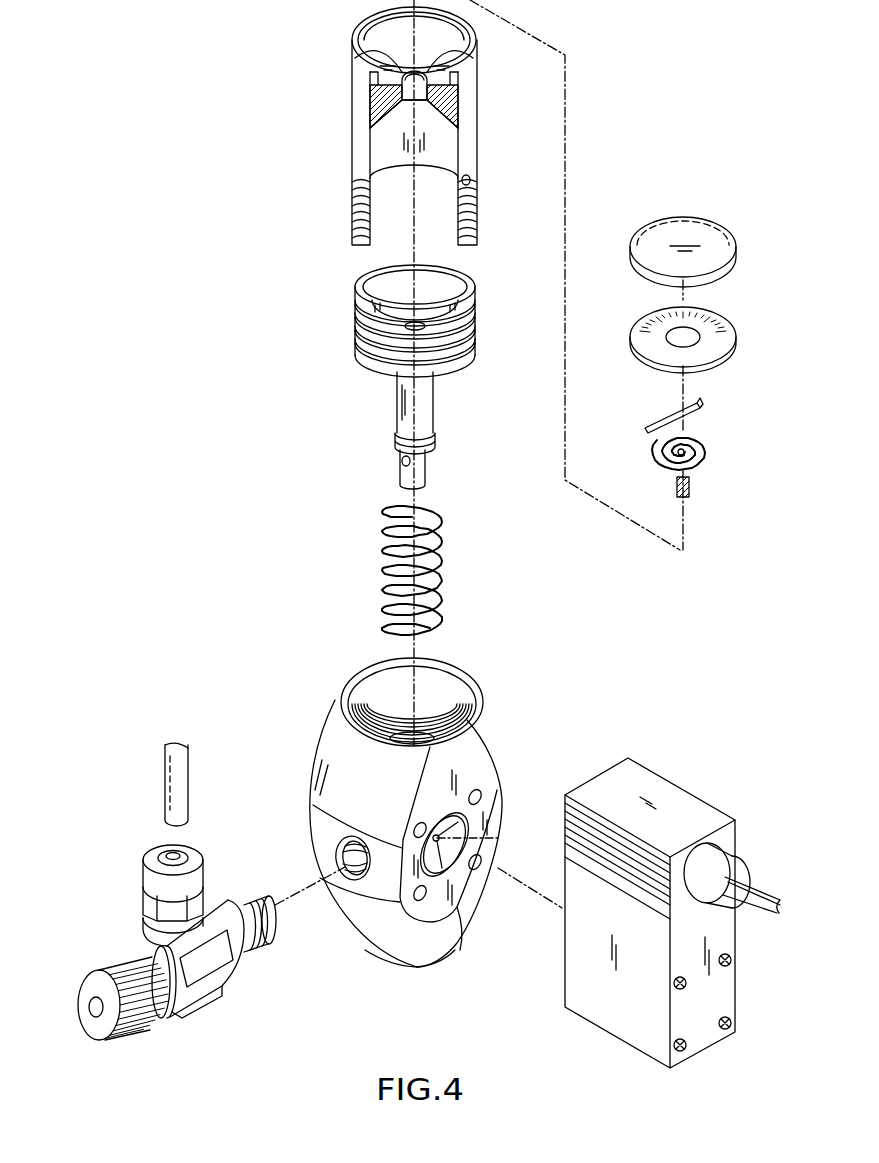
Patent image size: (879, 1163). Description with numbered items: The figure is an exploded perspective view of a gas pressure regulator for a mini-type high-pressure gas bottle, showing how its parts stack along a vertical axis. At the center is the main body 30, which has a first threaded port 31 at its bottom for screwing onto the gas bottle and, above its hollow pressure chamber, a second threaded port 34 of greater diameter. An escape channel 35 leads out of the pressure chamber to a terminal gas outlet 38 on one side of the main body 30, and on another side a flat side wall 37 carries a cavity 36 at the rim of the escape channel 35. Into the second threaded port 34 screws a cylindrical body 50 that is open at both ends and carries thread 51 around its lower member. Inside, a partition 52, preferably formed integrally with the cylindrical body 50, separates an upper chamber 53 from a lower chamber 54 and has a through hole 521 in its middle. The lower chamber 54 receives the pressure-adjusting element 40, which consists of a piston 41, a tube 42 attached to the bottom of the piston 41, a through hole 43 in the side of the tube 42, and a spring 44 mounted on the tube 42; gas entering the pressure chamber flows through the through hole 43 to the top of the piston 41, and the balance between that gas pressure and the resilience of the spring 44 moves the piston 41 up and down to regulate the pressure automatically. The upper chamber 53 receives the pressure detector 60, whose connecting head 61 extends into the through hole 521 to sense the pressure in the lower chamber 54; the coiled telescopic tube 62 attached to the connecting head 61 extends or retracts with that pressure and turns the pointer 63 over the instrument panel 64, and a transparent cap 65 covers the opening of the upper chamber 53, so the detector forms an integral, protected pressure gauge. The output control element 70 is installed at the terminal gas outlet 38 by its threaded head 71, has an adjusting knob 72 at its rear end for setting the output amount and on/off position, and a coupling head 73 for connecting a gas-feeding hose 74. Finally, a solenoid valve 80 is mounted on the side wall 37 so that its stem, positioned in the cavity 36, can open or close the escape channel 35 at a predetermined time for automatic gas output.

The main body 30 is at (305, 748).
The first threaded port 31 is at (392, 966).
The second threaded port 34 is at (362, 700).
The escape channel 35 is at (460, 910).
The cavity 36 is at (456, 833).
The side wall 37 is at (472, 768).
The terminal gas outlet 38 is at (338, 856).
The pressure-adjusting element 40 is at (308, 295).
The piston 41 is at (365, 292).
The tube 42 is at (405, 398).
The through hole 43 is at (403, 460).
The spring 44 is at (385, 545).
The cylindrical body 50 is at (256, 24).
The thread 51 is at (352, 203).
The partition 52 is at (390, 125).
The through hole 521 is at (370, 60).
The upper chamber 53 is at (440, 56).
The lower chamber 54 is at (440, 152).
The pressure detector 60 is at (752, 223).
The connecting head 61 is at (676, 484).
The coiled telescopic tube 62 is at (656, 450).
The pointer 63 is at (666, 414).
The instrument panel 64 is at (641, 322).
The transparent cap 65 is at (650, 240).
The output control element 70 is at (201, 1023).
The threaded head 71 is at (247, 897).
The adjusting knob 72 is at (112, 975).
The coupling head 73 is at (170, 850).
The gas-feeding hose 74 is at (172, 778).
The solenoid valve 80 is at (680, 800).